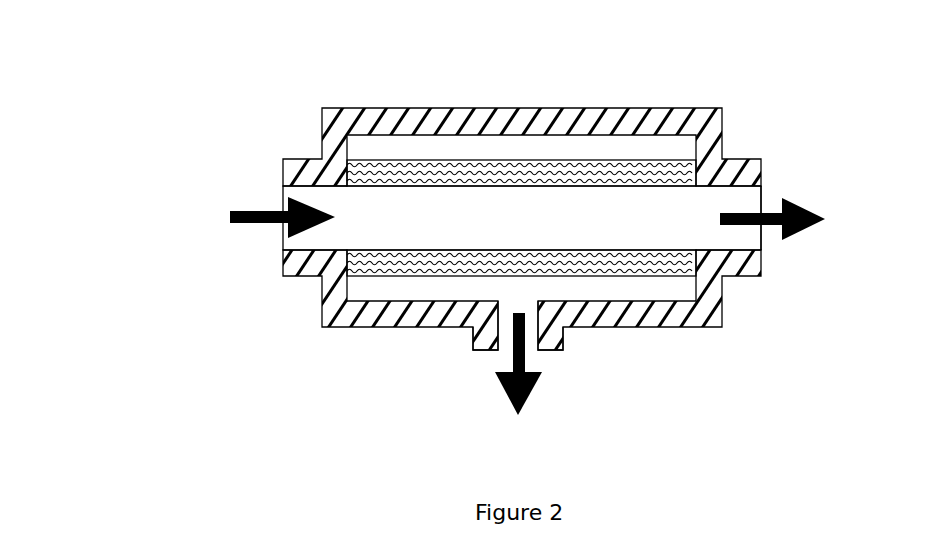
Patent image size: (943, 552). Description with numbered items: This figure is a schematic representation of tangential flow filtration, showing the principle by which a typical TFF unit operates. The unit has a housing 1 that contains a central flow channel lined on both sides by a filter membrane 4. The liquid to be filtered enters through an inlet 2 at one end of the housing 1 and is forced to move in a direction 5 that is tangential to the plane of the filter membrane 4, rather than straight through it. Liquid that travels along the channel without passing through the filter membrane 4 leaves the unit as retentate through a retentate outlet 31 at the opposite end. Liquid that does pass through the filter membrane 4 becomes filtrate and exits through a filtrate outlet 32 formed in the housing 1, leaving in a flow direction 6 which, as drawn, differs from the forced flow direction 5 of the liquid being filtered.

The housing 1 is at (327, 117).
The inlet 2 is at (283, 198).
The filter membrane 4 is at (475, 173).
The direction 5 is at (240, 223).
The flow direction 6 is at (505, 393).
The retentate outlet 31 is at (762, 197).
The filtrate outlet 32 is at (535, 350).